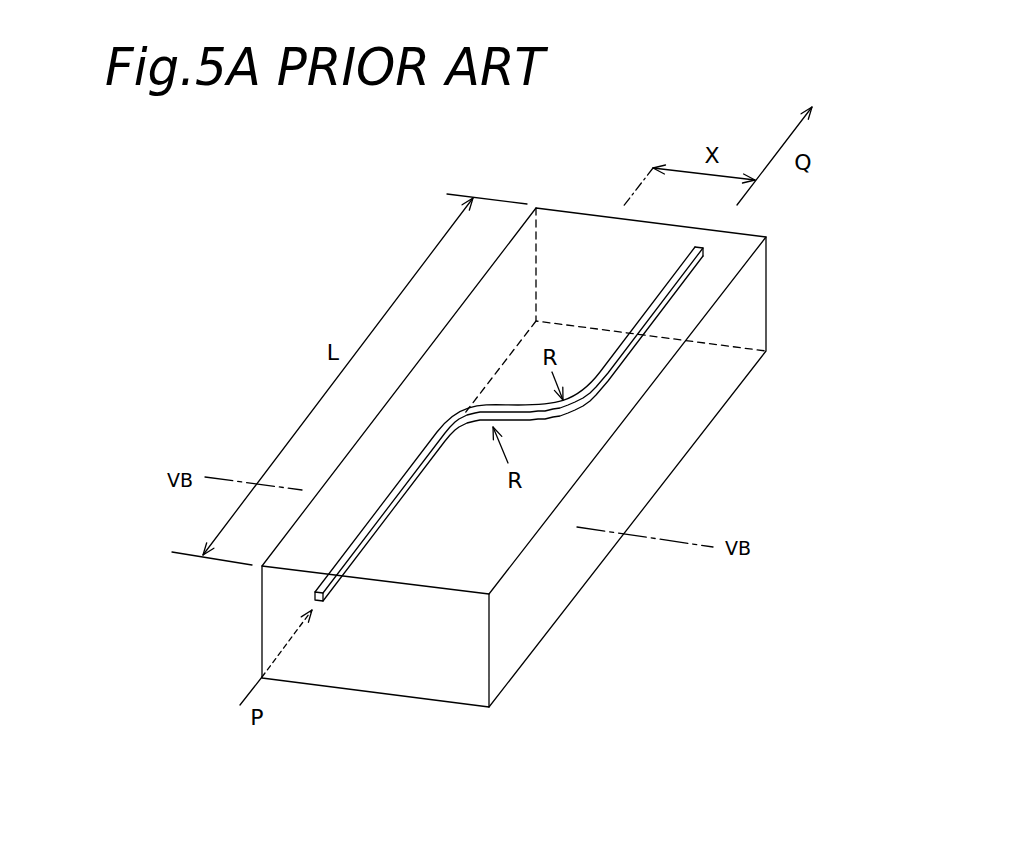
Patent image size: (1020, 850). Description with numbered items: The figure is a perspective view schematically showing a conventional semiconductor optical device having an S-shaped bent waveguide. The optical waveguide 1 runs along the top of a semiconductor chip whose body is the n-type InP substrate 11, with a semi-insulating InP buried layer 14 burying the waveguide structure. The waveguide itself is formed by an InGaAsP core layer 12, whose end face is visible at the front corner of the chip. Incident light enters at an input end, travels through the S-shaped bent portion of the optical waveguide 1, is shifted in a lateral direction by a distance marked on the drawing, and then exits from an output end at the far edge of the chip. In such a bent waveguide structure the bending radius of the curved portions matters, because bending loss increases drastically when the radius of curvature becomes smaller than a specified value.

The optical waveguide 1 is at (462, 458).
The n-type InP substrate 11 is at (514, 473).
The semi-insulating InP buried layer 14 is at (463, 677).
The InGaAsP core layer 12 is at (312, 598).